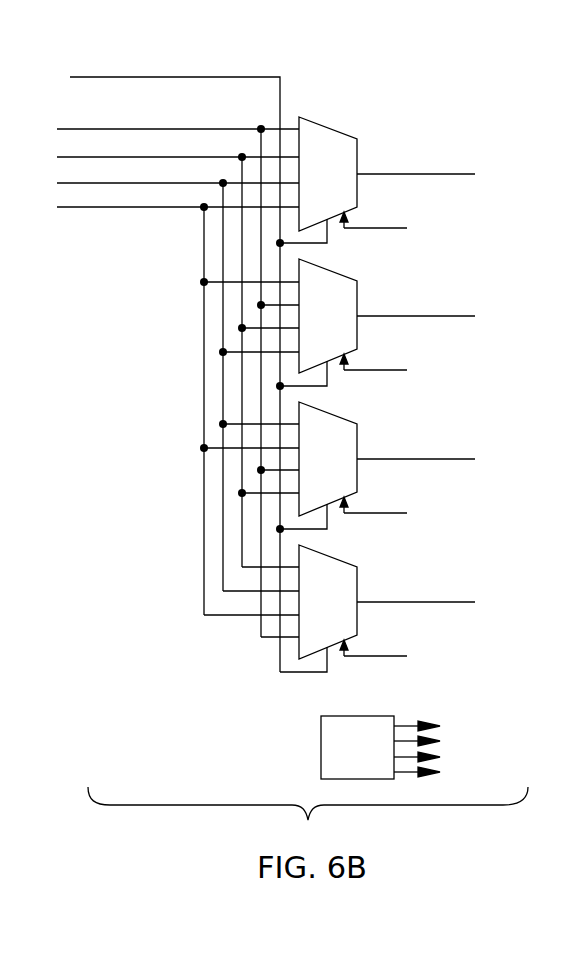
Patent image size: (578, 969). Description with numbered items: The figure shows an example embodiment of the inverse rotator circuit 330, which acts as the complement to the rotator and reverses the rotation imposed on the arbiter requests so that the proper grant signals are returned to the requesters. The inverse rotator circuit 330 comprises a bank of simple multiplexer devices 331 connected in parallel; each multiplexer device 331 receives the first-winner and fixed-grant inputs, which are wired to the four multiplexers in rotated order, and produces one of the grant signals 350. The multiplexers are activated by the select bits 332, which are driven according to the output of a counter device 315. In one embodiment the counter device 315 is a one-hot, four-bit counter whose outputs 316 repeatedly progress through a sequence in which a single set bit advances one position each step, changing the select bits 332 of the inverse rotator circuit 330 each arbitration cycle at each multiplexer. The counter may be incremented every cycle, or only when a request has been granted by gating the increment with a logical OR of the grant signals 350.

The inverse rotator circuit 330 is at (370, 26).
The multiplexer device 331 is at (311, 75).
The select bits 332 is at (219, 77).
The Grant(0:3) signals 350 is at (470, 150).
The counter device 315 is at (330, 757).
The counter outputs 316 is at (453, 716).